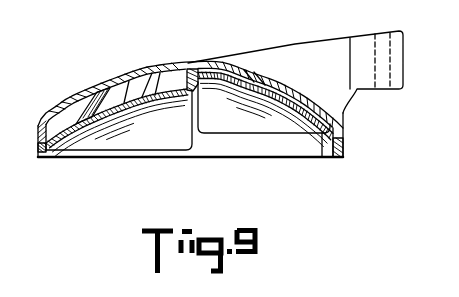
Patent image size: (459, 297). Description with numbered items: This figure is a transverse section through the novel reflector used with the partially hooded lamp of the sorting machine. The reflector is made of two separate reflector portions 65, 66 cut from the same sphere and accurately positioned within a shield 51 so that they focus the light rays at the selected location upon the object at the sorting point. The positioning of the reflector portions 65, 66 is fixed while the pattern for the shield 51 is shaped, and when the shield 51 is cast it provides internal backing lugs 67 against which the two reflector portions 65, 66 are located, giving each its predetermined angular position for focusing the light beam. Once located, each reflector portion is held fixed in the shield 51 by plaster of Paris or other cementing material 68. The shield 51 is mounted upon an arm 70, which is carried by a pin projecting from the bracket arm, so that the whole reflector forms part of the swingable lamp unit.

The shield 51 is at (133, 75).
The reflector portion 65 is at (112, 108).
The reflector portion 66 is at (296, 98).
The internal backing lugs 67 is at (86, 106).
The cementing material 68 is at (197, 68).
The arm 70 is at (373, 90).